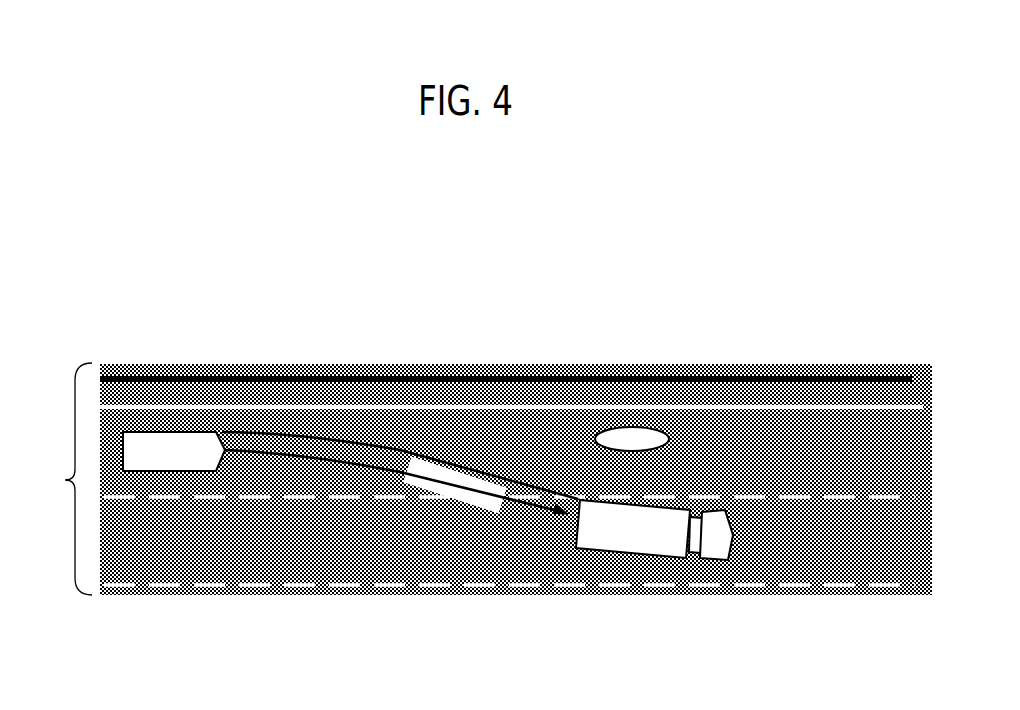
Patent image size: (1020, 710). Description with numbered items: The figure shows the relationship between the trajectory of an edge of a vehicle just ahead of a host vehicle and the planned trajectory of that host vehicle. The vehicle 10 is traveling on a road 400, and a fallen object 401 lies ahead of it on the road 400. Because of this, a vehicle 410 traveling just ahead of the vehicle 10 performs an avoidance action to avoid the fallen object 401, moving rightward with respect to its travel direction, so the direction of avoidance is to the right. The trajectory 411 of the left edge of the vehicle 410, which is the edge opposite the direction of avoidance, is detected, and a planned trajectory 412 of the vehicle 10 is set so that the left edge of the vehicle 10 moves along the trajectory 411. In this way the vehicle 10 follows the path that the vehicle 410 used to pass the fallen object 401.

The vehicle 10 is at (172, 447).
The road 400 is at (474, 479).
The fallen object 401 is at (632, 434).
The vehicle 410 is at (630, 540).
The trajectory 411 is at (367, 440).
The planned trajectory 412 is at (262, 455).